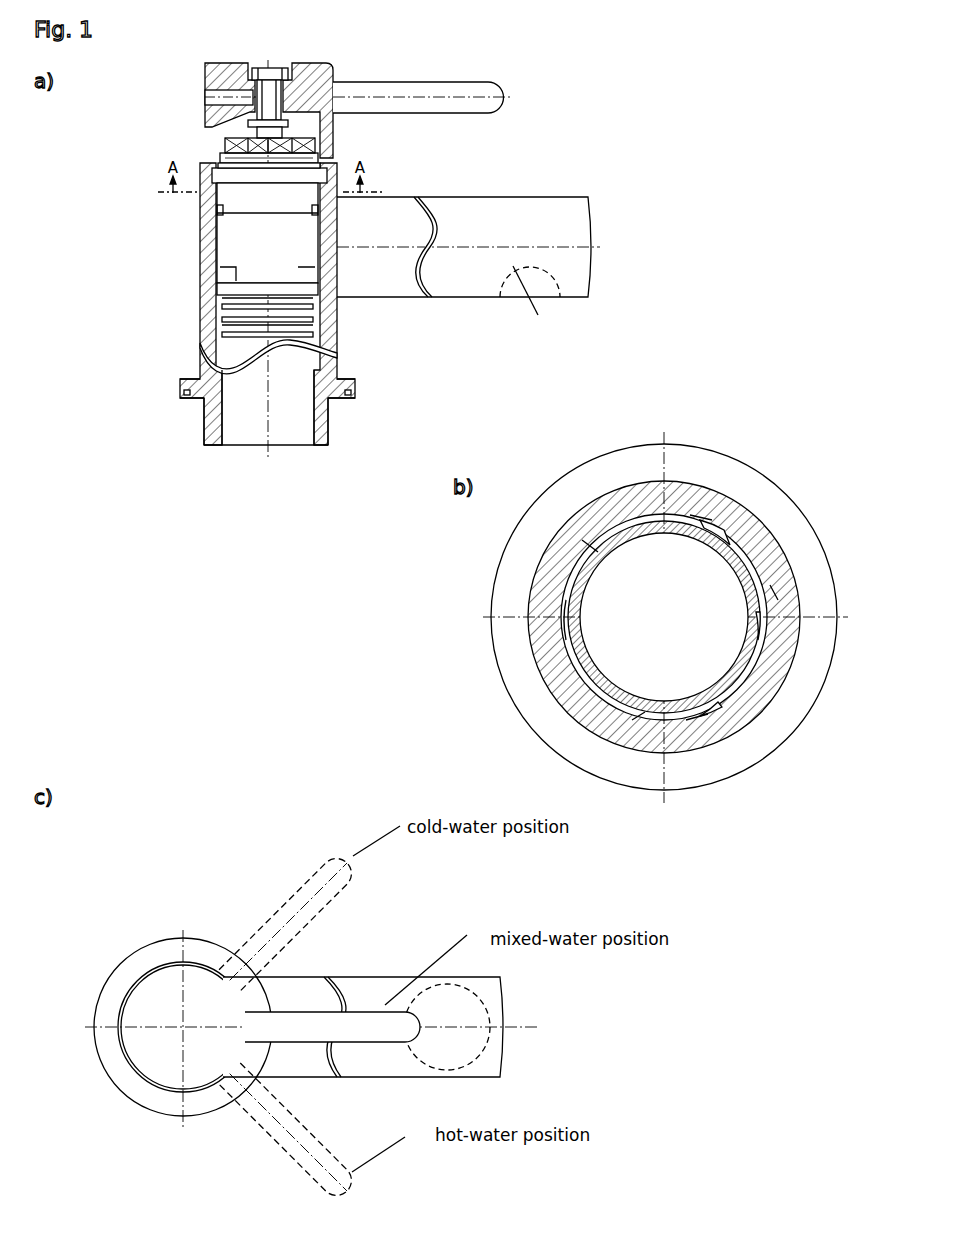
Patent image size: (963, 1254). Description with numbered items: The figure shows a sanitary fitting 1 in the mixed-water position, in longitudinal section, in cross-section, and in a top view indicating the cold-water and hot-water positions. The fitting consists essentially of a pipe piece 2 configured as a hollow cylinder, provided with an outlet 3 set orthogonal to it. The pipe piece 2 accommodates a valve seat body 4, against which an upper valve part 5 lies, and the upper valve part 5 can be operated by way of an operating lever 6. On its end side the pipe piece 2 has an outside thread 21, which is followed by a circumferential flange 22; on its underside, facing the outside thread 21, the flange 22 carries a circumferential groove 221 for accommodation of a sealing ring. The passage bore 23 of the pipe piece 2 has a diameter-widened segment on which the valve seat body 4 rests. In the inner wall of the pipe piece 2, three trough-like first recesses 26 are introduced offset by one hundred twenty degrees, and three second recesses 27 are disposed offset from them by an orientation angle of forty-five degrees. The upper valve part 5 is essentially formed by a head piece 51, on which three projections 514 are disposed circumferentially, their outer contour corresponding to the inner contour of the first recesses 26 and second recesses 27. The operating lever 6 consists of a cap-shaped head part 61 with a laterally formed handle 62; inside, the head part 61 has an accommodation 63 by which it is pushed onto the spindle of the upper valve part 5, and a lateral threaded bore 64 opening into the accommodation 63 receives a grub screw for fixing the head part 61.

The sanitary fitting 1 is at (601, 111).
The pipe piece 2 is at (200, 276).
The outlet 3 is at (470, 200).
The valve seat body 4 is at (236, 320).
The upper valve part 5 is at (240, 247).
The operating lever 6 is at (192, 70).
The outside thread 21 is at (330, 440).
The circumferential flange 22 is at (353, 383).
The passage bore 23 is at (243, 430).
The first recesses 26 is at (706, 497).
The second recesses 27 is at (590, 536).
The head piece 51 is at (598, 683).
The head part 61 is at (286, 70).
The handle 62 is at (400, 82).
The accommodation 63 is at (288, 112).
The threaded bore 64 is at (207, 97).
The circumferential groove 221 is at (189, 396).
The projections 514 is at (728, 522).